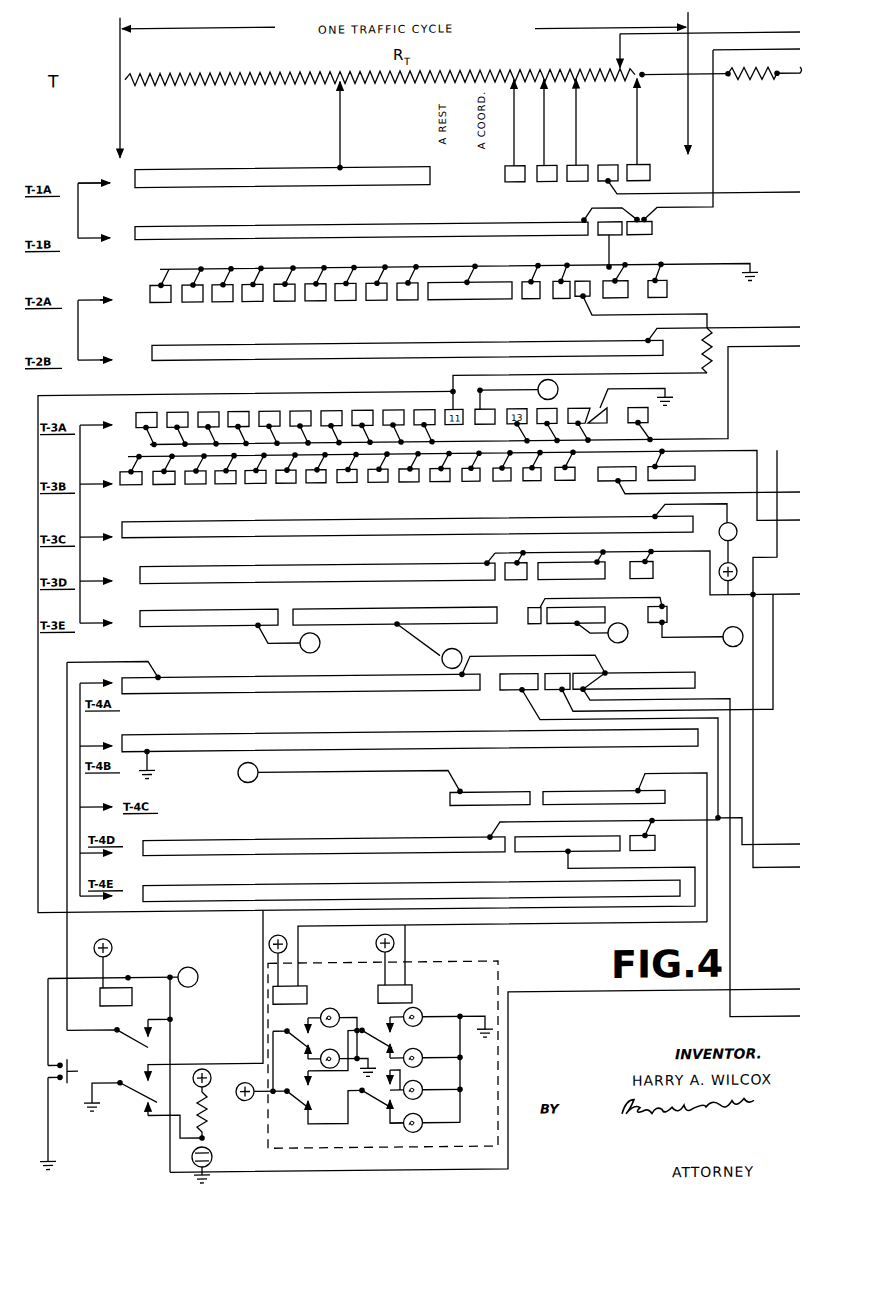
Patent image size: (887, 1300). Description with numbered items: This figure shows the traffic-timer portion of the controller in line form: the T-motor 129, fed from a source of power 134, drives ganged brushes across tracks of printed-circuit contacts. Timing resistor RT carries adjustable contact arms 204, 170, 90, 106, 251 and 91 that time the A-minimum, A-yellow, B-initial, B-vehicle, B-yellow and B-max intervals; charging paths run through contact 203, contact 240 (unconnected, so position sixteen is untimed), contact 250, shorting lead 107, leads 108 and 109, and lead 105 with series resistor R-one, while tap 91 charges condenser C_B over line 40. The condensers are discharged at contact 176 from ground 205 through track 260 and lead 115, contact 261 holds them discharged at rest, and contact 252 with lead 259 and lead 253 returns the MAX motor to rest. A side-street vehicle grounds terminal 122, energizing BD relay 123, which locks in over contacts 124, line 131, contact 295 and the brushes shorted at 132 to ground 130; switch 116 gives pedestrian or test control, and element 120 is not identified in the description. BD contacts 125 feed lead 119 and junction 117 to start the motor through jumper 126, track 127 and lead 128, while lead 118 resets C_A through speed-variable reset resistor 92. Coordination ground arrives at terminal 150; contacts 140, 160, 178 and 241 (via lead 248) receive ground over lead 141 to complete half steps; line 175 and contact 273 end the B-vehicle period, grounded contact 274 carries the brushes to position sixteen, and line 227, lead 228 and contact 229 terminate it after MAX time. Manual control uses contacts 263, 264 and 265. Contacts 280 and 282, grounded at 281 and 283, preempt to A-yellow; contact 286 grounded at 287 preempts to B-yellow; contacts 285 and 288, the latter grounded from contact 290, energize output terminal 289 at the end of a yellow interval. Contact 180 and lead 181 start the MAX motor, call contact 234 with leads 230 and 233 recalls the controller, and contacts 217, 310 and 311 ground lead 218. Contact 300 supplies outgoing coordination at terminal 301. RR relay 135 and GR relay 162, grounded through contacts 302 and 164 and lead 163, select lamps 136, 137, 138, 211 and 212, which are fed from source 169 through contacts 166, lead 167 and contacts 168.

The line 40 is at (760, 18).
The adjustable contact arm 91 is at (618, 44).
The lead 109 is at (770, 52).
The lead 105 is at (792, 78).
The adjustable contact arm 204 is at (345, 108).
The contact 203 is at (242, 168).
The shorting lead 107 is at (82, 206).
The adjustable contact arm 106 is at (580, 118).
The adjustable contact arm 251 is at (644, 108).
The adjustable contact arm 90 is at (540, 135).
The contact 240 is at (601, 158).
The adjustable contact arm 170 is at (519, 155).
The lead 108 is at (575, 212).
The contact 250 is at (652, 182).
The lead 253 is at (740, 187).
The contact 252 is at (622, 242).
The lead 259 is at (604, 252).
The ground 205 is at (728, 250).
The contact 261 is at (477, 302).
The contact 176 is at (534, 302).
The lead 115 is at (748, 310).
The speed variable reset resistor 92 is at (712, 342).
The track T-2B 260 is at (350, 338).
The lead 119 is at (136, 394).
The junction 117 is at (444, 388).
The lead 118 is at (530, 372).
The coordination terminal 150 is at (535, 378).
The contact 273 is at (568, 403).
The grounded contact 274 is at (611, 408).
The line 175 is at (728, 382).
The lead 141 is at (745, 448).
The contact 290 is at (697, 478).
The lead 248 is at (701, 498).
The jumper 126 is at (80, 504).
The track T-3C 127 is at (277, 520).
The lead 128 is at (692, 517).
The T-motor 129 is at (738, 532).
The source of power 134 is at (738, 572).
The contact 263 is at (242, 566).
The contact 264 is at (526, 584).
The terminate B-V contact 229 is at (570, 584).
The contact 265 is at (656, 576).
The lead 228 is at (714, 590).
The contact 280 is at (226, 610).
The contact 282 is at (377, 606).
The ground terminal 281 is at (320, 645).
The ground terminal 283 is at (440, 650).
The contact 285 is at (537, 626).
The contact 286 is at (580, 620).
The ground terminal 287 is at (640, 628).
The contact 288 is at (670, 614).
The output terminal 289 is at (724, 652).
The contact 140 is at (468, 484).
The contact 160 is at (505, 484).
The contact 178 is at (518, 484).
The contact 241 is at (590, 490).
The line 131 is at (98, 662).
The lock-in contact 295 is at (284, 692).
The call contact 234 is at (600, 664).
The contact 217 is at (510, 696).
The start max contact 180 is at (528, 700).
The lead 181 is at (769, 715).
The ground 130 is at (234, 732).
The outgoing coordination terminal 301 is at (234, 782).
The contact 300 is at (444, 800).
The contact 302 is at (660, 806).
The brush short 132 is at (82, 796).
The contact 310 is at (324, 836).
The contact 164 is at (548, 866).
The contact 311 is at (658, 850).
The lead 218 is at (758, 840).
The line 227 is at (768, 876).
The lead 163 is at (565, 920).
The lead 233 is at (736, 946).
The lead 230 is at (746, 993).
The detector terminal 122 is at (196, 976).
The BD relay 123 is at (133, 998).
The BD relay contacts 124 is at (134, 1024).
The switch 116 is at (60, 1056).
The BD relay contacts 125 is at (134, 1066).
The relay contact 120 is at (140, 1092).
The RR relay 135 is at (308, 993).
The GR relay 162 is at (410, 988).
The artery red signal lamp 212 is at (328, 1008).
The side street green signal lamp 211 is at (418, 1008).
The side street red signal lamp 137 is at (342, 1048).
The artery yellow signal lamp 138 is at (424, 1092).
The artery green signal lamp 136 is at (415, 1132).
The relay contacts 166 is at (376, 1090).
The lead 167 is at (314, 1130).
The relay contacts 168 is at (304, 1116).
The positive source terminal 169 is at (241, 1108).